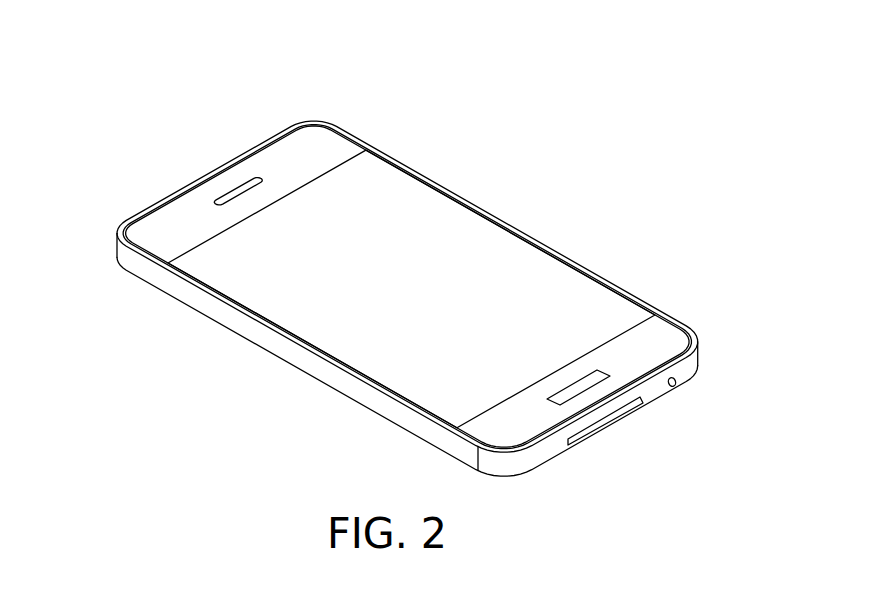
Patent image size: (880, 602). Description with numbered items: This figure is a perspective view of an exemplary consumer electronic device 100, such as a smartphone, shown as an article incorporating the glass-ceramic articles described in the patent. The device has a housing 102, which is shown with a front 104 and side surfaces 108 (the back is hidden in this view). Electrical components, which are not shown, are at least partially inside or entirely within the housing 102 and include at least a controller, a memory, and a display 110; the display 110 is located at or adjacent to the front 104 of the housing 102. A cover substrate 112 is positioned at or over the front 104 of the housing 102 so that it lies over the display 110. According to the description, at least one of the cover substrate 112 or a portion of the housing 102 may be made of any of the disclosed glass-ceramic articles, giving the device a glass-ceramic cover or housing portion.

The consumer electronic device 100 is at (563, 124).
The housing 102 is at (327, 141).
The front surface 104 is at (665, 335).
The side surfaces 108 is at (308, 372).
The display 110 is at (440, 232).
The cover substrate 112 is at (524, 258).